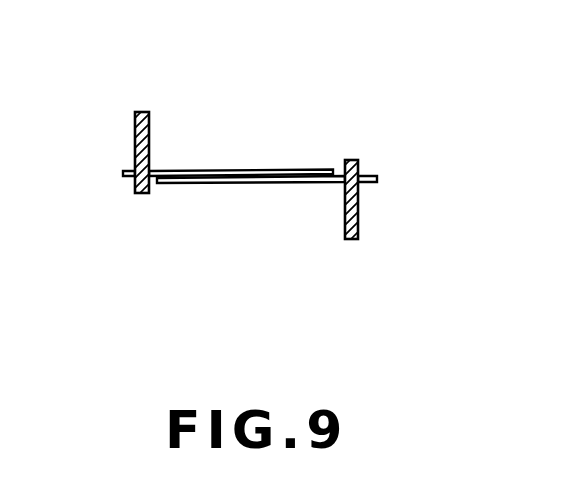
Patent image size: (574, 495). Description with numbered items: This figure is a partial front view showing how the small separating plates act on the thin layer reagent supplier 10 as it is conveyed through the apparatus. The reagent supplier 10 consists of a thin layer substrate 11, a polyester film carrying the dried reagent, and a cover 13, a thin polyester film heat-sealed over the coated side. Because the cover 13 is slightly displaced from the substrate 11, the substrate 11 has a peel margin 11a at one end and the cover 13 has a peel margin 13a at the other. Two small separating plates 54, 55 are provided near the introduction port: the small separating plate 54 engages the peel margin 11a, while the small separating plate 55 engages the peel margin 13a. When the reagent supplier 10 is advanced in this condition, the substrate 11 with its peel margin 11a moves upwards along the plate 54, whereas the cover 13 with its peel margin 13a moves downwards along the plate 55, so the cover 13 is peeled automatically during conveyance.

The thin layer reagent supplier 10 is at (236, 160).
The thin layer substrate 11 is at (297, 168).
The peel margin 11a is at (128, 178).
The cover 13 is at (190, 184).
The peel margin 13a is at (373, 174).
The small separating plate 54 is at (137, 122).
The small separating plate 55 is at (360, 219).